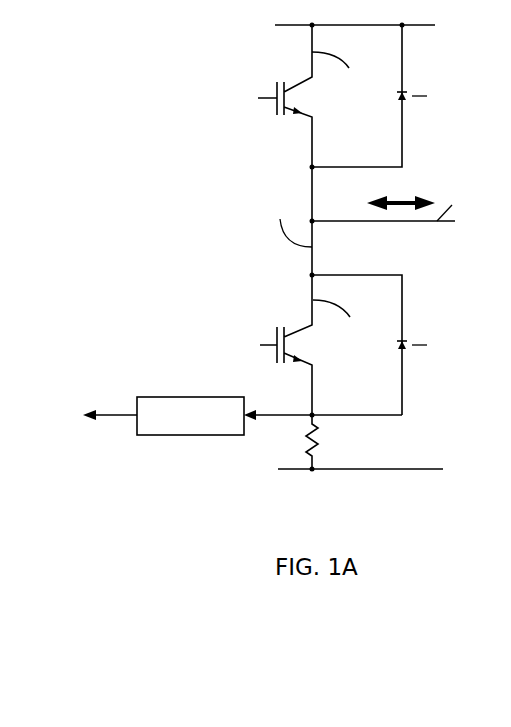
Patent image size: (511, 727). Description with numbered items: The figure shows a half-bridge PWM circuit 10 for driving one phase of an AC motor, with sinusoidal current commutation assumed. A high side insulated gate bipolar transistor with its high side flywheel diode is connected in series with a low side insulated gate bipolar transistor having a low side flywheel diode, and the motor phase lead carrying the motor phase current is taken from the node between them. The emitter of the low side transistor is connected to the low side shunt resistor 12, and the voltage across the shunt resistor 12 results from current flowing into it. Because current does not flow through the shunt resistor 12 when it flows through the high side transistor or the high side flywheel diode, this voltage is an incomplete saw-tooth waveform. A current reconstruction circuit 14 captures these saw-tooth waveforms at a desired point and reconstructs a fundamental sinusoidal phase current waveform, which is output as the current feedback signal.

The half-bridge PWM circuit 10 is at (222, 264).
The low side shunt resistor 12 is at (335, 442).
The current reconstruction circuit 14 is at (191, 390).